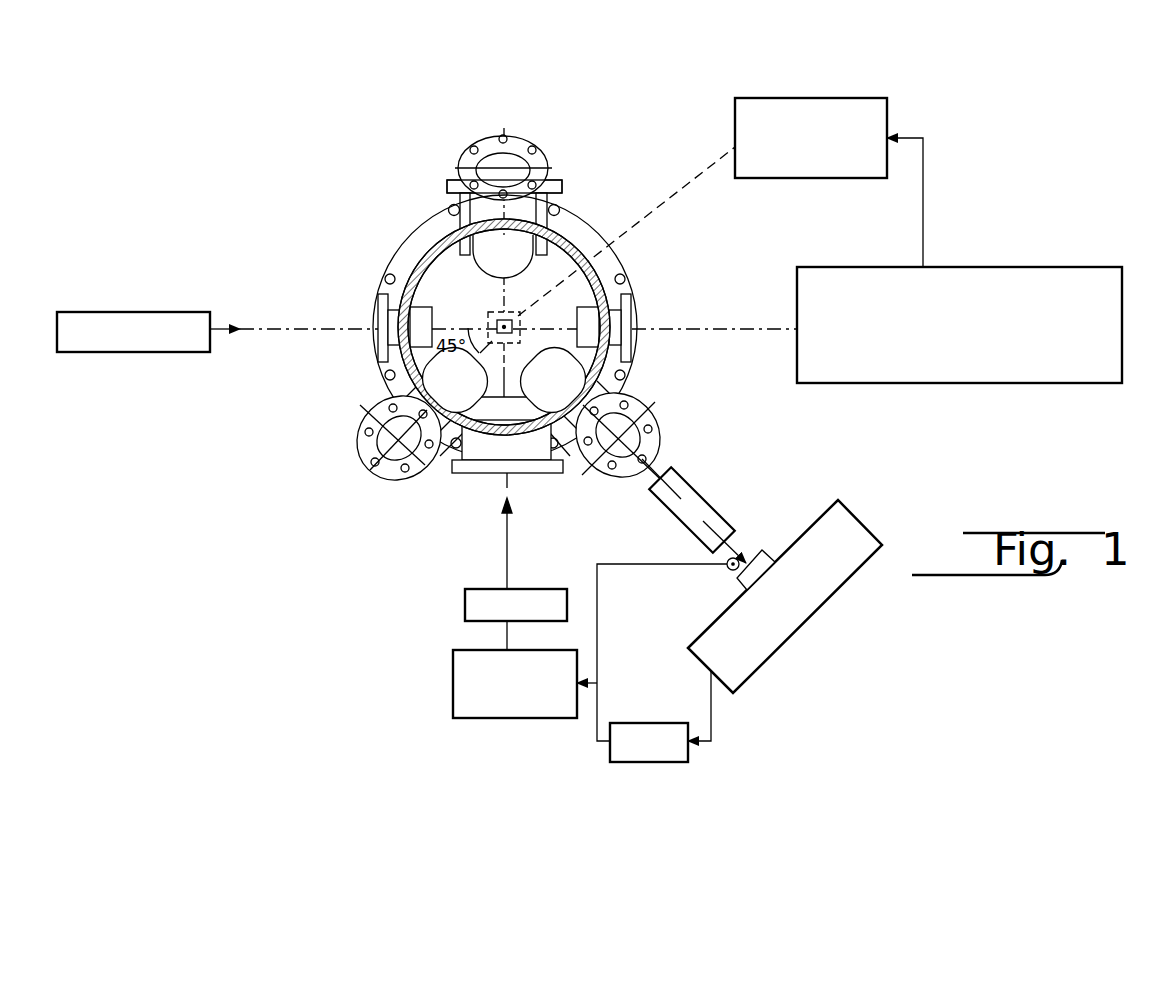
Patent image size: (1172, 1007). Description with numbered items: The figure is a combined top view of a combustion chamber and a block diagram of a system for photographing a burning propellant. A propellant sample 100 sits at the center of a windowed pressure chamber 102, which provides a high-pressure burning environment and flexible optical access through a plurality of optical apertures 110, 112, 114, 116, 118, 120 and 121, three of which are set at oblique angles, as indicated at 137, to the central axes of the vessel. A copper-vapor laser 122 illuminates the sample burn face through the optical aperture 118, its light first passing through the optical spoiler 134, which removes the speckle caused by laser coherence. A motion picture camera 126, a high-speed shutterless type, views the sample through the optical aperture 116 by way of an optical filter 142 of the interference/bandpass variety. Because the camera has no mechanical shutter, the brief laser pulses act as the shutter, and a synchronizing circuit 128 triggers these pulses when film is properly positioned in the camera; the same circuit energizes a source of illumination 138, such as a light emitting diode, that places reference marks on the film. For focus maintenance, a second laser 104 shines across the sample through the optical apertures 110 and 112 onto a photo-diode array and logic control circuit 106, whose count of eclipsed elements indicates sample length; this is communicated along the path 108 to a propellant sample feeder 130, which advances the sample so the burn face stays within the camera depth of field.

The propellant sample 100 is at (488, 316).
The pressure chamber 102 is at (575, 242).
The laser 104 is at (140, 312).
The photo-diode array and logic control circuit 106 is at (1000, 267).
The path 108 is at (925, 175).
The optical aperture 110 is at (372, 312).
The optical aperture 112 is at (640, 318).
The optical aperture 114 is at (357, 440).
The optical aperture 116 is at (660, 434).
The optical aperture 118 is at (540, 475).
The optical aperture 120 is at (520, 140).
The optical aperture 121 is at (560, 184).
The copper-vapor laser 122 is at (453, 712).
The motion picture camera 126 is at (815, 512).
The synchronizing circuit 128 is at (660, 723).
The propellant sample feeder 130 is at (790, 98).
The optical spoiler 134 is at (465, 604).
The oblique angle 137 is at (483, 360).
The source of illumination 138 is at (728, 570).
The optical filter 142 is at (715, 476).